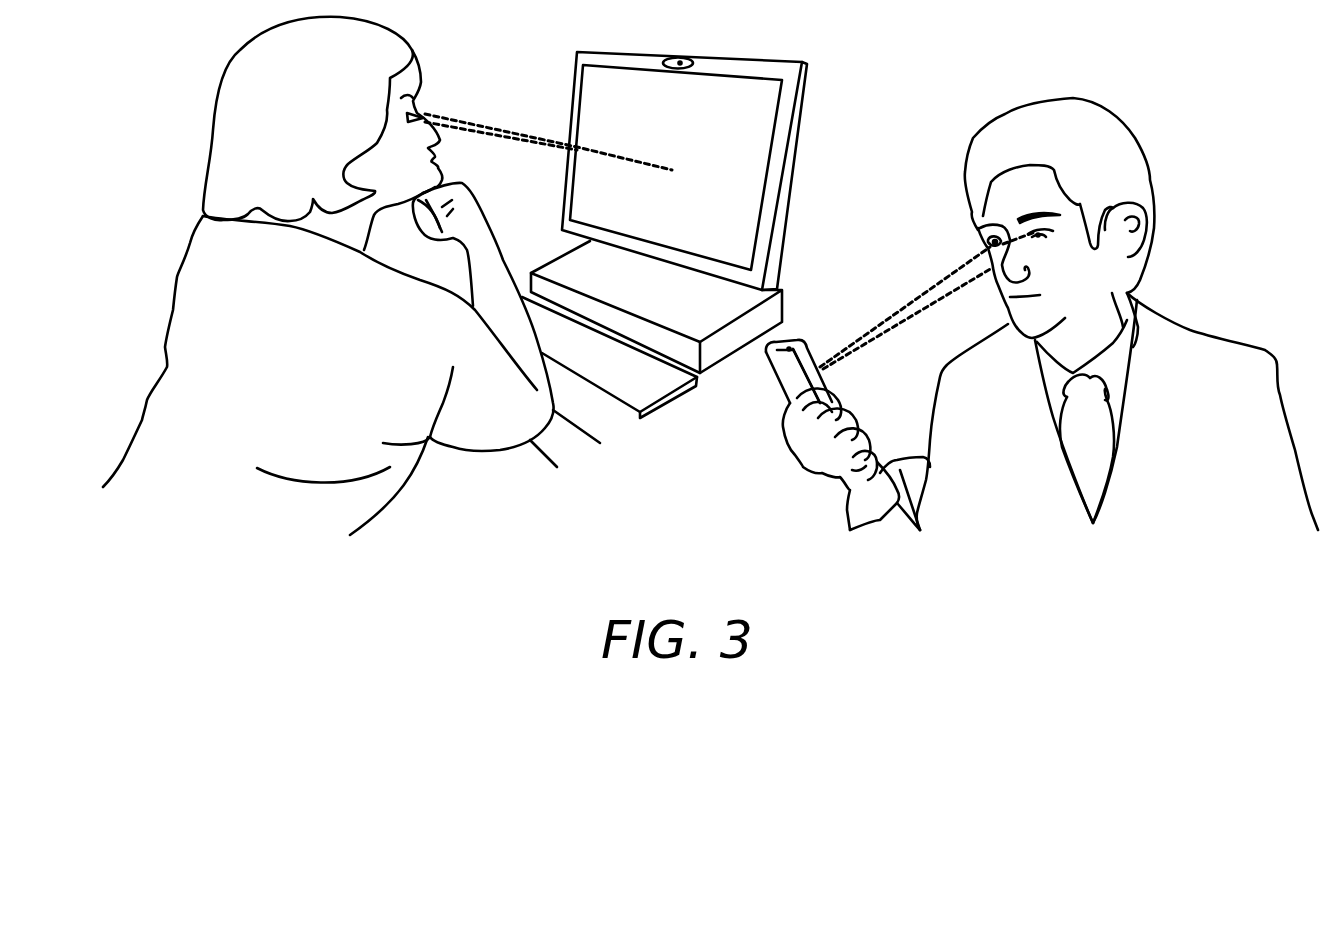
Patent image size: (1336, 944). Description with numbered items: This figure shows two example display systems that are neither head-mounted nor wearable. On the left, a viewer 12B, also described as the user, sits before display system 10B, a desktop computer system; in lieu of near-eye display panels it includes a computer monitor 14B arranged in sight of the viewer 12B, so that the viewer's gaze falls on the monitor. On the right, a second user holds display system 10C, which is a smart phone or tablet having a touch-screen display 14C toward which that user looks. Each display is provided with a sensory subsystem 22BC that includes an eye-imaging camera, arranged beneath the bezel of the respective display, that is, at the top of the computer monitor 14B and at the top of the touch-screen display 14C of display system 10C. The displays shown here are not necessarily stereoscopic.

The viewer 12B is at (147, 179).
The display system 10B is at (844, 173).
The computer monitor 14B is at (760, 122).
The sensory subsystem 22BC is at (677, 69).
The display system 10C is at (787, 382).
The touch-screen display 14C is at (825, 374).